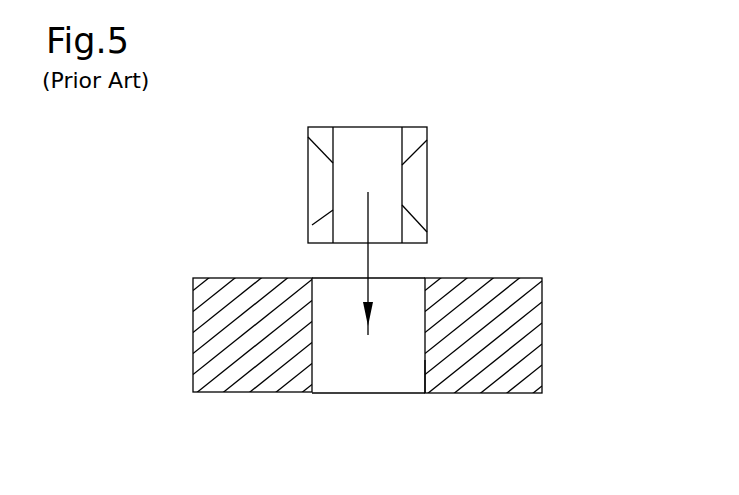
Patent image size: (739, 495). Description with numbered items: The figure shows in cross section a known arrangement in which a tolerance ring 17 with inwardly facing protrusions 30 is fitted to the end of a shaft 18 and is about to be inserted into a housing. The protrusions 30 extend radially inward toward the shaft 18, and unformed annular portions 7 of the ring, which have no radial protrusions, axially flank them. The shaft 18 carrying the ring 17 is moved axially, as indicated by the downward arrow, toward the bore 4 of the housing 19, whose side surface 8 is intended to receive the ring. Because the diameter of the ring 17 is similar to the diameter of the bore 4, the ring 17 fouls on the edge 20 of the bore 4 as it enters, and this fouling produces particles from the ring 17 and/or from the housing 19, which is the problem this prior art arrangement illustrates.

The bore 4 is at (368, 419).
The unformed annular portions 7 is at (455, 217).
The surface of the bore 8 is at (453, 413).
The tolerance ring 17 is at (427, 128).
The shaft 18 is at (355, 167).
The housing 19 is at (517, 352).
The edge of the bore 20 is at (431, 240).
The inwardly facing protrusions 30 is at (402, 187).